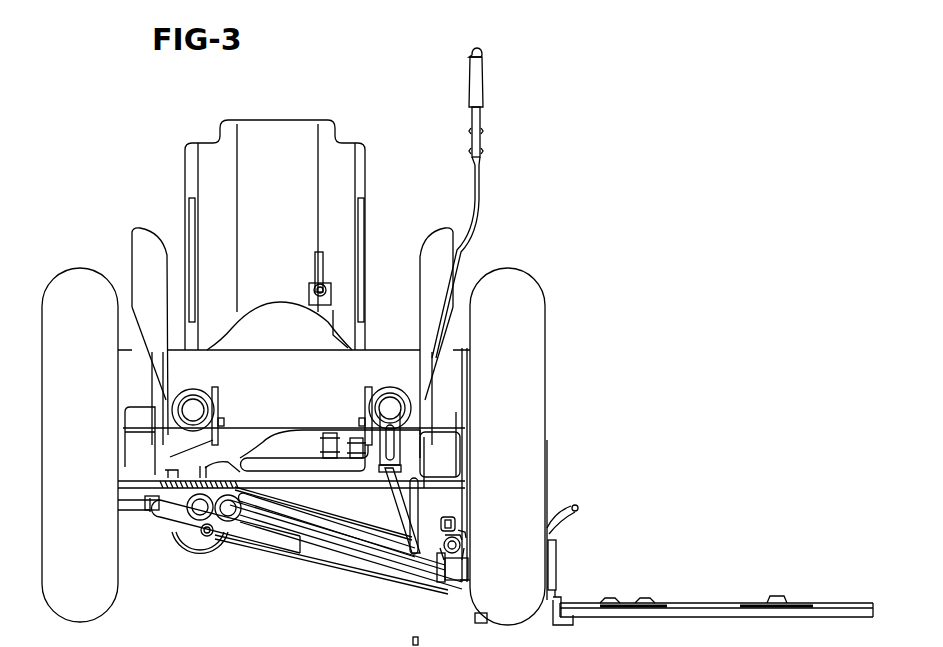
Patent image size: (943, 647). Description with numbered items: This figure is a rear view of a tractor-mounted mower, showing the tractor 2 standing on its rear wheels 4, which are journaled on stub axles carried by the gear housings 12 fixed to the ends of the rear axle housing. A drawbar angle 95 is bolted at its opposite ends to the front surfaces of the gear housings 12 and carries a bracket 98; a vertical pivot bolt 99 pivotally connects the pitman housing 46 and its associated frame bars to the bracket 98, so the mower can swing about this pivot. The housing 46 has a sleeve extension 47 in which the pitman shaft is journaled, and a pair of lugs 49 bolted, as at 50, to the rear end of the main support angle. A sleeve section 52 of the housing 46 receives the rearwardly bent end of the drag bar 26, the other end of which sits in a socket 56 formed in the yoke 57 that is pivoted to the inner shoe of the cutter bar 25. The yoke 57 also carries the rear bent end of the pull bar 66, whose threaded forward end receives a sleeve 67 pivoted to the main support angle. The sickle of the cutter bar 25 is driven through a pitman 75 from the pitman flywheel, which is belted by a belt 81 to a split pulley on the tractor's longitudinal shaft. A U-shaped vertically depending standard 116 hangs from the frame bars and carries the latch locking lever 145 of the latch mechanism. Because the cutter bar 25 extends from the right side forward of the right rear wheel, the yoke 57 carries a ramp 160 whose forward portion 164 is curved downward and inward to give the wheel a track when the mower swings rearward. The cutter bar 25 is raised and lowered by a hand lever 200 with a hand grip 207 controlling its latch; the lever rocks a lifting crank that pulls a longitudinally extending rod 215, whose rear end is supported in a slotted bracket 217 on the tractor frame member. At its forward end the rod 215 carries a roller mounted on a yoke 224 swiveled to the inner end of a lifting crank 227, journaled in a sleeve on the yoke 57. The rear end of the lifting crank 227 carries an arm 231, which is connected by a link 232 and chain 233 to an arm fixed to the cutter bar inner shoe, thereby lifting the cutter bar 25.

The tractor 2 is at (352, 128).
The rear wheels 4 is at (70, 283).
The gear housings 12 is at (135, 462).
The cutter bar 25 is at (768, 570).
The drag bar 26 is at (355, 545).
The housing 46 is at (215, 528).
The sleeve extension 47 is at (167, 515).
The lugs 49 is at (157, 517).
The bolts 50 is at (155, 508).
The sleeve section 52 is at (237, 537).
The socket 56 is at (443, 570).
The yoke 57 is at (462, 590).
The pull bar 66 is at (388, 535).
The sleeve 67 is at (293, 515).
The pitman 75 is at (277, 540).
The belt 81 is at (263, 443).
The drawbar angle 95 is at (295, 462).
The bracket 98 is at (172, 473).
The pivot bolt 99 is at (218, 458).
The standard 116 is at (317, 490).
The latch locking lever 145 is at (310, 508).
The ramp 160 is at (560, 540).
The forward portion 164 is at (548, 527).
The hand lever 200 is at (496, 180).
The hand grip 207 is at (482, 92).
The rod 215 is at (402, 532).
The slotted bracket 217 is at (392, 418).
The yoke 224 is at (440, 505).
The lifting crank 227 is at (428, 518).
The arm 231 is at (443, 507).
The link 232 is at (457, 558).
The chain 233 is at (452, 547).